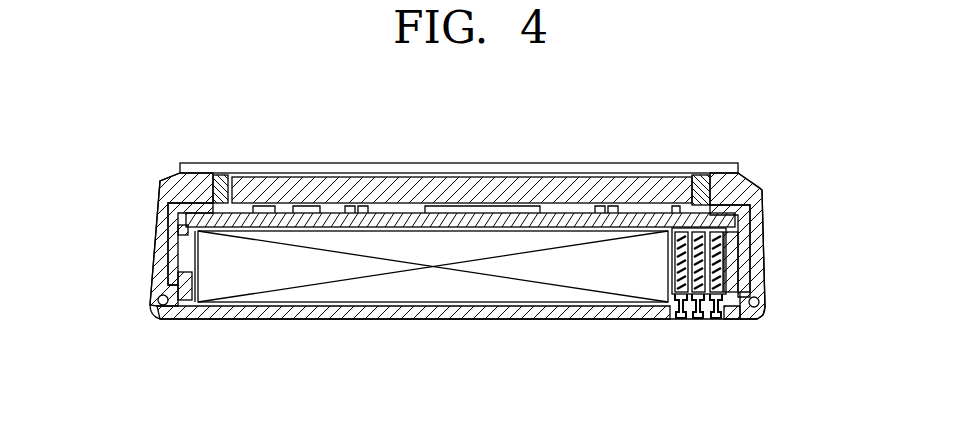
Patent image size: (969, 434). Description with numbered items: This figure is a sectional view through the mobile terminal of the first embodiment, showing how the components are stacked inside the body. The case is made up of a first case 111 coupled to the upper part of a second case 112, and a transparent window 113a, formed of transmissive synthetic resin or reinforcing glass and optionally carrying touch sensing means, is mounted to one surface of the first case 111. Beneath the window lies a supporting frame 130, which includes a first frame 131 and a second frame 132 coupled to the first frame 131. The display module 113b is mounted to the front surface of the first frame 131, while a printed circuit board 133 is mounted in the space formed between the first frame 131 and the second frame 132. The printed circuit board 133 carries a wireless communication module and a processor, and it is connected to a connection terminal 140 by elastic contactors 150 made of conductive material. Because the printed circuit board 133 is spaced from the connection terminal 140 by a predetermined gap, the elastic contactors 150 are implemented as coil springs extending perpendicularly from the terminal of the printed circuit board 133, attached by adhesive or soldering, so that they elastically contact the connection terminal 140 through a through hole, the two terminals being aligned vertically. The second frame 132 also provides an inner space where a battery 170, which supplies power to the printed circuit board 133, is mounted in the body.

The first case 111 is at (760, 237).
The second case 112 is at (495, 312).
The window 113a is at (385, 168).
The display module 113b is at (439, 195).
The supporting frame 130 is at (394, 251).
The first frame 131 is at (170, 221).
The second frame 132 is at (80, 207).
The printed circuit board 133 is at (335, 218).
The connection terminal 140 is at (697, 332).
The elastic contactors 150 is at (725, 267).
The battery 170 is at (375, 287).